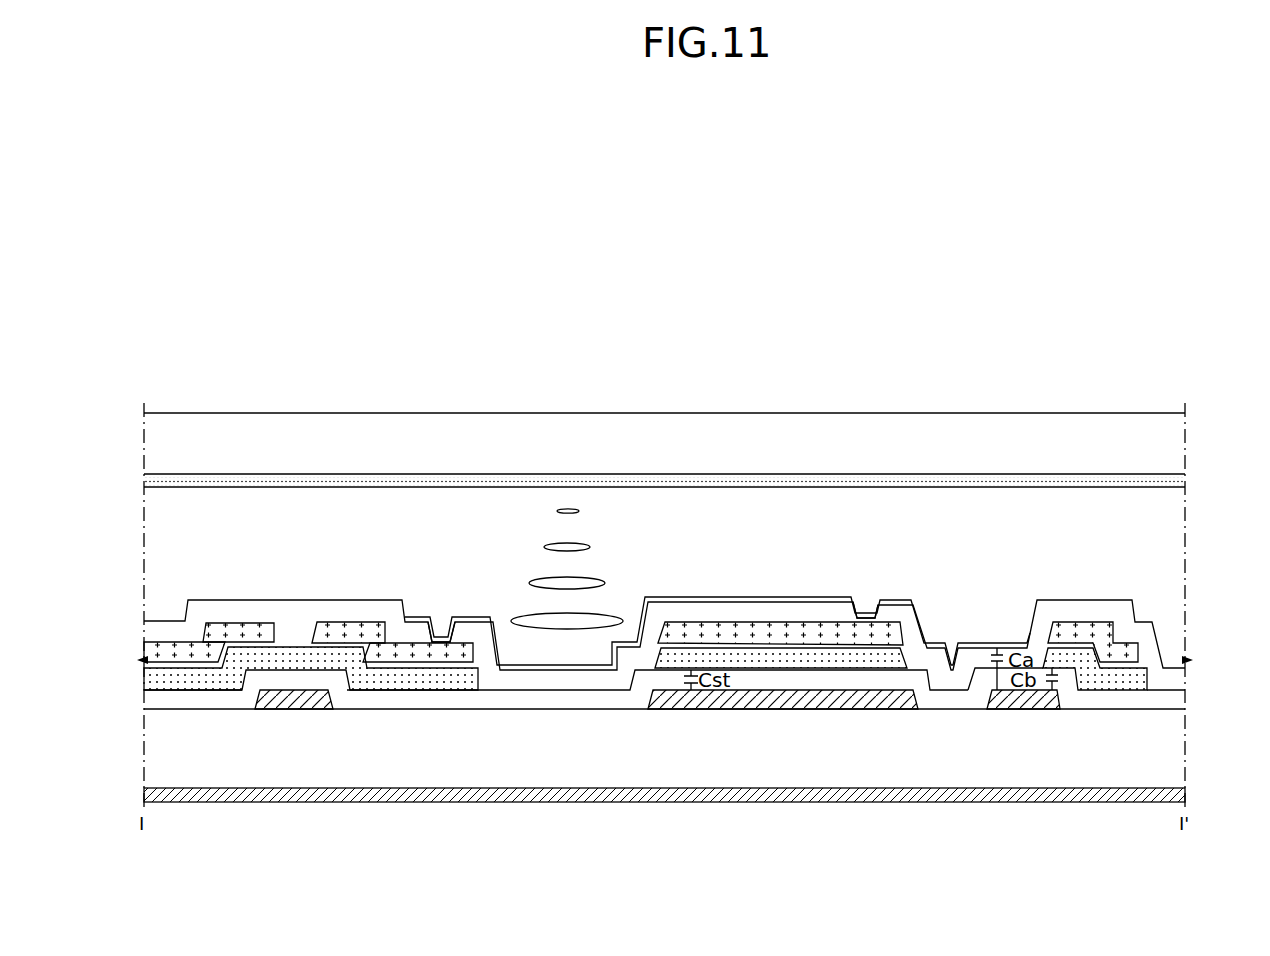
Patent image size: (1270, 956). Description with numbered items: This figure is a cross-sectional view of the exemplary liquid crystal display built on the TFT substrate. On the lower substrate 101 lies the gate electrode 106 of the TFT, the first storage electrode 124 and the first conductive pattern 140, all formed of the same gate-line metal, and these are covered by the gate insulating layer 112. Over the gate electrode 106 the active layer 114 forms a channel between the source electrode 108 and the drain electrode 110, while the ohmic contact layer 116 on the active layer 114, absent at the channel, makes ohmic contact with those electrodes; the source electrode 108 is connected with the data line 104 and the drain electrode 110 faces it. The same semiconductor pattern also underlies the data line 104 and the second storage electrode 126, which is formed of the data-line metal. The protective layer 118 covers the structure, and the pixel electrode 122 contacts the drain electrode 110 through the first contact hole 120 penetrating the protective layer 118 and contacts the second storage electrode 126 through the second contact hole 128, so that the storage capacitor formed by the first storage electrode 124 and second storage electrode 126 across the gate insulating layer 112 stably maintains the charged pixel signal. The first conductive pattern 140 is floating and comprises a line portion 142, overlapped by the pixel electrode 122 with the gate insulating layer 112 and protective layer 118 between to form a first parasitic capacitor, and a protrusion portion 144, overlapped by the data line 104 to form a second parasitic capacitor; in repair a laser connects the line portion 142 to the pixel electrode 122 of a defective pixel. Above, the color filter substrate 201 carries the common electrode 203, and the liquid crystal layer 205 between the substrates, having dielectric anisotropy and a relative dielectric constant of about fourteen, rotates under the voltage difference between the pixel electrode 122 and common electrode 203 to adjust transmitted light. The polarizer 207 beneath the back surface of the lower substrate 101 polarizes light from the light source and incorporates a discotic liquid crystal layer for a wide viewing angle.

The lower substrate 101 is at (1183, 752).
The data line 104 is at (163, 652).
The gate electrode 106 is at (291, 710).
The source electrode 108 is at (235, 622).
The drain electrode 110 is at (346, 621).
The gate insulating layer 112 is at (1183, 705).
The active layer 114 is at (363, 688).
The ohmic contact layer 116 is at (437, 667).
The protective layer 118 is at (1183, 679).
The first contact hole 120 is at (440, 634).
The pixel electrode 122 is at (563, 666).
The first storage electrode 124 is at (720, 708).
The second storage electrode 126 is at (692, 625).
The second contact hole 128 is at (866, 612).
The first conductive pattern 140 is at (999, 785).
The line portion 142 is at (993, 708).
The protrusion portion 144 is at (1046, 708).
The color filter substrate 201 is at (1183, 443).
The common electrode 203 is at (1183, 481).
The liquid crystal layer 205 is at (1183, 565).
The polarizer 207 is at (1183, 797).